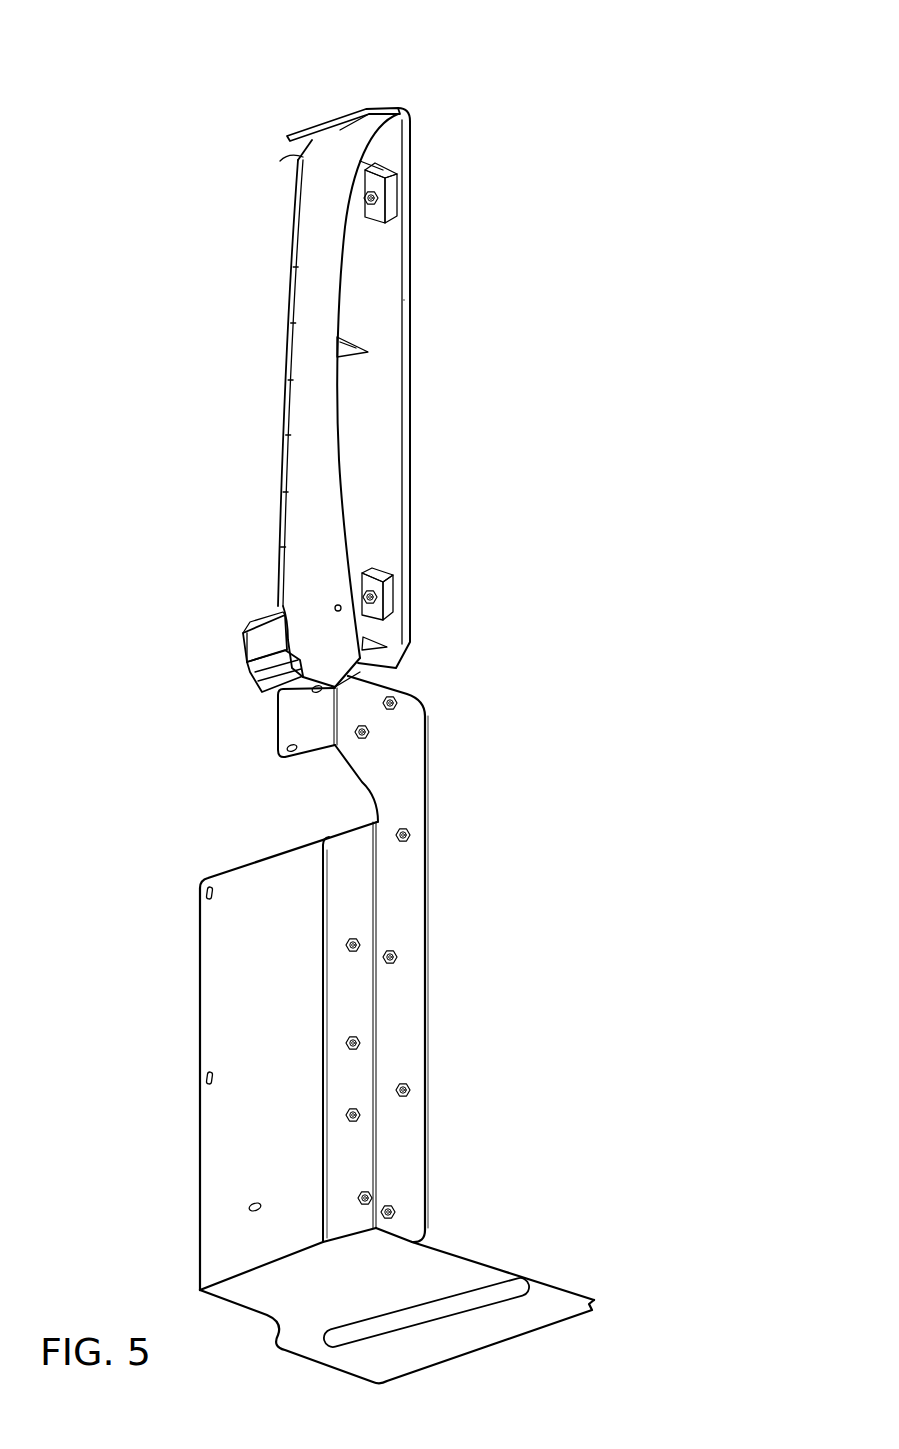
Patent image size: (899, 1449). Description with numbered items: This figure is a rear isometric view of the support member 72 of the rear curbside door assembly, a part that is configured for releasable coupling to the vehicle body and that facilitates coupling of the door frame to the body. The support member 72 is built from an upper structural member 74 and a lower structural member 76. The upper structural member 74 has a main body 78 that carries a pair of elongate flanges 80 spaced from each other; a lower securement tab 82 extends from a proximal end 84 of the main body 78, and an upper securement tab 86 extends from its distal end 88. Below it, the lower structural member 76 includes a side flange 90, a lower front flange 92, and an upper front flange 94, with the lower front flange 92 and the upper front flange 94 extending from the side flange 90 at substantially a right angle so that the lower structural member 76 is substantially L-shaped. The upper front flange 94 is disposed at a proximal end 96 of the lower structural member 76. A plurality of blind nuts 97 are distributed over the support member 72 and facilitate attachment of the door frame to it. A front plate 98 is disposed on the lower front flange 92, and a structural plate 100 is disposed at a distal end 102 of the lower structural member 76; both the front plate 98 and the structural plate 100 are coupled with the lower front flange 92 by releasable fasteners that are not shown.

The support member 72 is at (222, 72).
The upper structural member 74 is at (440, 262).
The lower structural member 76 is at (446, 857).
The main body 78 is at (280, 412).
The elongate flanges 80 is at (381, 122).
The lower securement tab 82 is at (262, 673).
The proximal end 84 is at (254, 601).
The upper securement tab 86 is at (343, 117).
The distal end 88 is at (387, 149).
The side flange 90 is at (415, 1024).
The lower front flange 92 is at (340, 1162).
The upper front flange 94 is at (320, 745).
The proximal end 96 is at (262, 823).
The blind nuts 97 is at (395, 210).
The front plate 98 is at (212, 1045).
The structural plate 100 is at (482, 1335).
The distal end 102 is at (502, 1258).